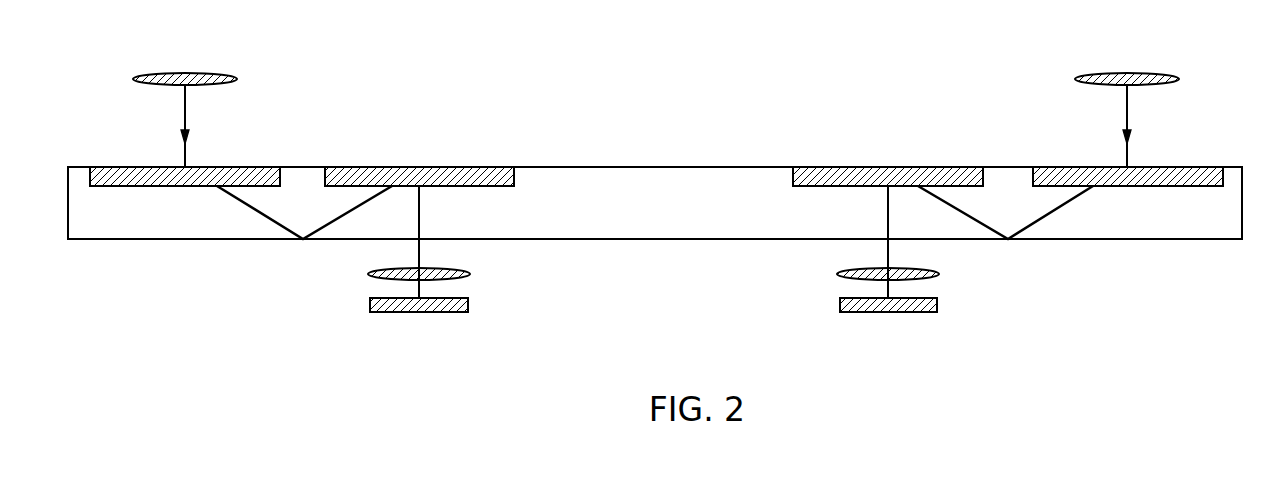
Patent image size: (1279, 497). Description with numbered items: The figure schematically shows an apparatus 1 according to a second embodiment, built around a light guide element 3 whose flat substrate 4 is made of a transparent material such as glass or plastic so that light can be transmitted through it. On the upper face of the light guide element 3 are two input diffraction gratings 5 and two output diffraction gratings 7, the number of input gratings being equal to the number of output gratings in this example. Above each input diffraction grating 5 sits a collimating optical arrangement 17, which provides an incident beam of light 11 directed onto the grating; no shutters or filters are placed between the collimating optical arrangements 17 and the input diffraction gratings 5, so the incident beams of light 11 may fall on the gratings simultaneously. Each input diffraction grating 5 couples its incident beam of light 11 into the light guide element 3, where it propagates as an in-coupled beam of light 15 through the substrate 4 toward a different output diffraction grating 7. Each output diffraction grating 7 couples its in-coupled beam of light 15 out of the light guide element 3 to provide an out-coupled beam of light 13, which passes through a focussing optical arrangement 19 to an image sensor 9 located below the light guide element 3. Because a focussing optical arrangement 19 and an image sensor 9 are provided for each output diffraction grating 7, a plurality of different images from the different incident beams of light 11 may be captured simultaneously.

The apparatus 1 is at (1173, 239).
The light guide element 3 is at (127, 239).
The substrate 4 is at (1242, 205).
The input diffraction grating 5 is at (280, 167).
The output diffraction grating 7 is at (415, 167).
The image sensor 9 is at (368, 302).
The incident beam of light 11 is at (188, 160).
The out-coupled beam of light 13 is at (422, 248).
The in-coupled beam of light 15 is at (267, 215).
The collimating optical arrangement 17 is at (185, 72).
The focussing optical arrangement 19 is at (365, 275).